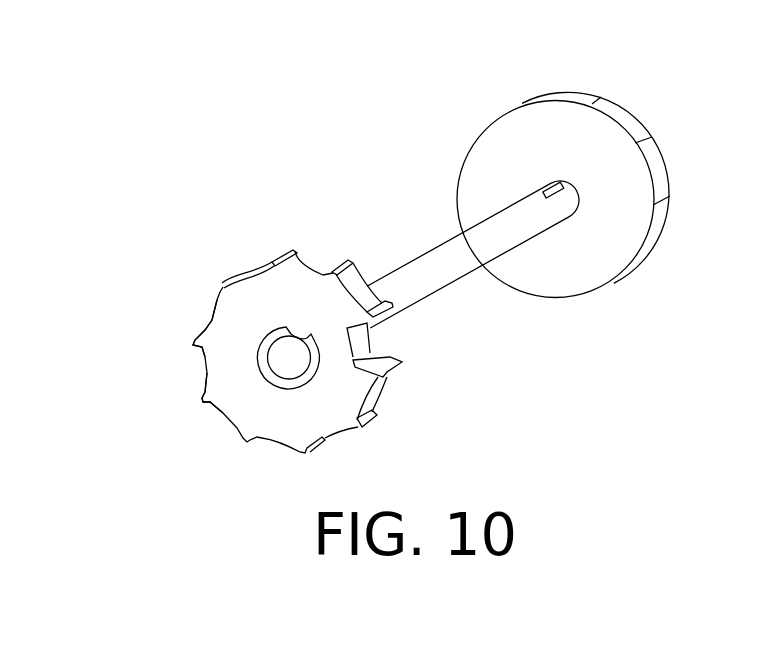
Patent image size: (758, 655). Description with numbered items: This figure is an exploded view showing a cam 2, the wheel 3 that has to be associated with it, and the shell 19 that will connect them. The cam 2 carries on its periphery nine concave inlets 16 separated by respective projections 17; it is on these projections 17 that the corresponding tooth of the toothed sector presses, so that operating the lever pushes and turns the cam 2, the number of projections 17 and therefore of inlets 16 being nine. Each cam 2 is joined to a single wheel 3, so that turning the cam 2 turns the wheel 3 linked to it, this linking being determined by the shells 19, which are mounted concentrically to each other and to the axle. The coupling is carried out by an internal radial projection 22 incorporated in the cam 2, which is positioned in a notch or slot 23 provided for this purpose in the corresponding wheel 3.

The cam 2 is at (250, 407).
The wheel 3 is at (552, 150).
The concave inlets 16 is at (203, 368).
The projections 17 is at (272, 262).
The shell 19 is at (432, 262).
The internal radial projection 22 is at (301, 332).
The notch or slot 23 is at (558, 187).